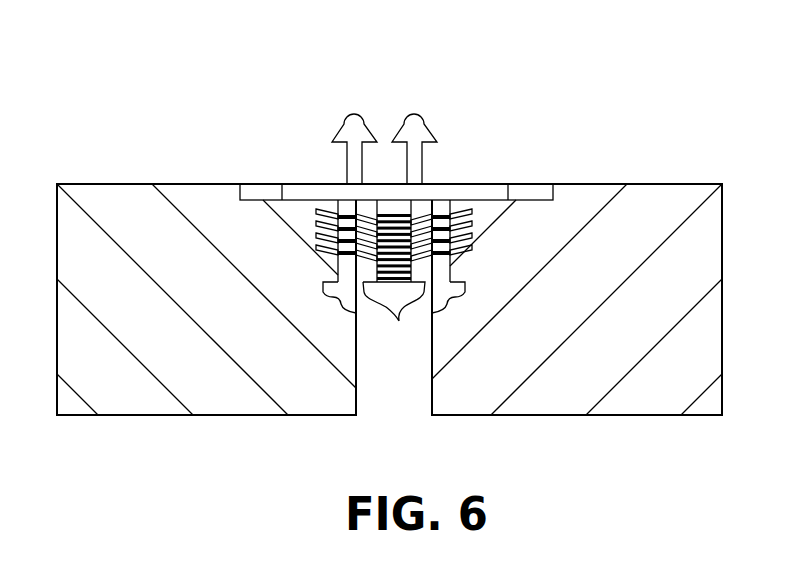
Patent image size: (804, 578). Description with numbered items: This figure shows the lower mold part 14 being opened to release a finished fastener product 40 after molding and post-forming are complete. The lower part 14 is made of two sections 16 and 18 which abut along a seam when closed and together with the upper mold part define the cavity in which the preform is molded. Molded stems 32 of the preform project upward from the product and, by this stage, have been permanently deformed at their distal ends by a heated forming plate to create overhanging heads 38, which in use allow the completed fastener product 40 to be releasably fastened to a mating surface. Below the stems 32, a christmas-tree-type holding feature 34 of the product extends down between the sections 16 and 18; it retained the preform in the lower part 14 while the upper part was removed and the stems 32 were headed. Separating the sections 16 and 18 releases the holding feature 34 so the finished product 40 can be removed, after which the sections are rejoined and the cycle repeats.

The lower part 14 is at (192, 123).
The lower part section 16 is at (205, 277).
The lower part section 18 is at (602, 283).
The preform stems 32 is at (347, 158).
The holding feature 34 is at (398, 322).
The overhanging heads 38 is at (428, 128).
The fastener product 40 is at (384, 118).